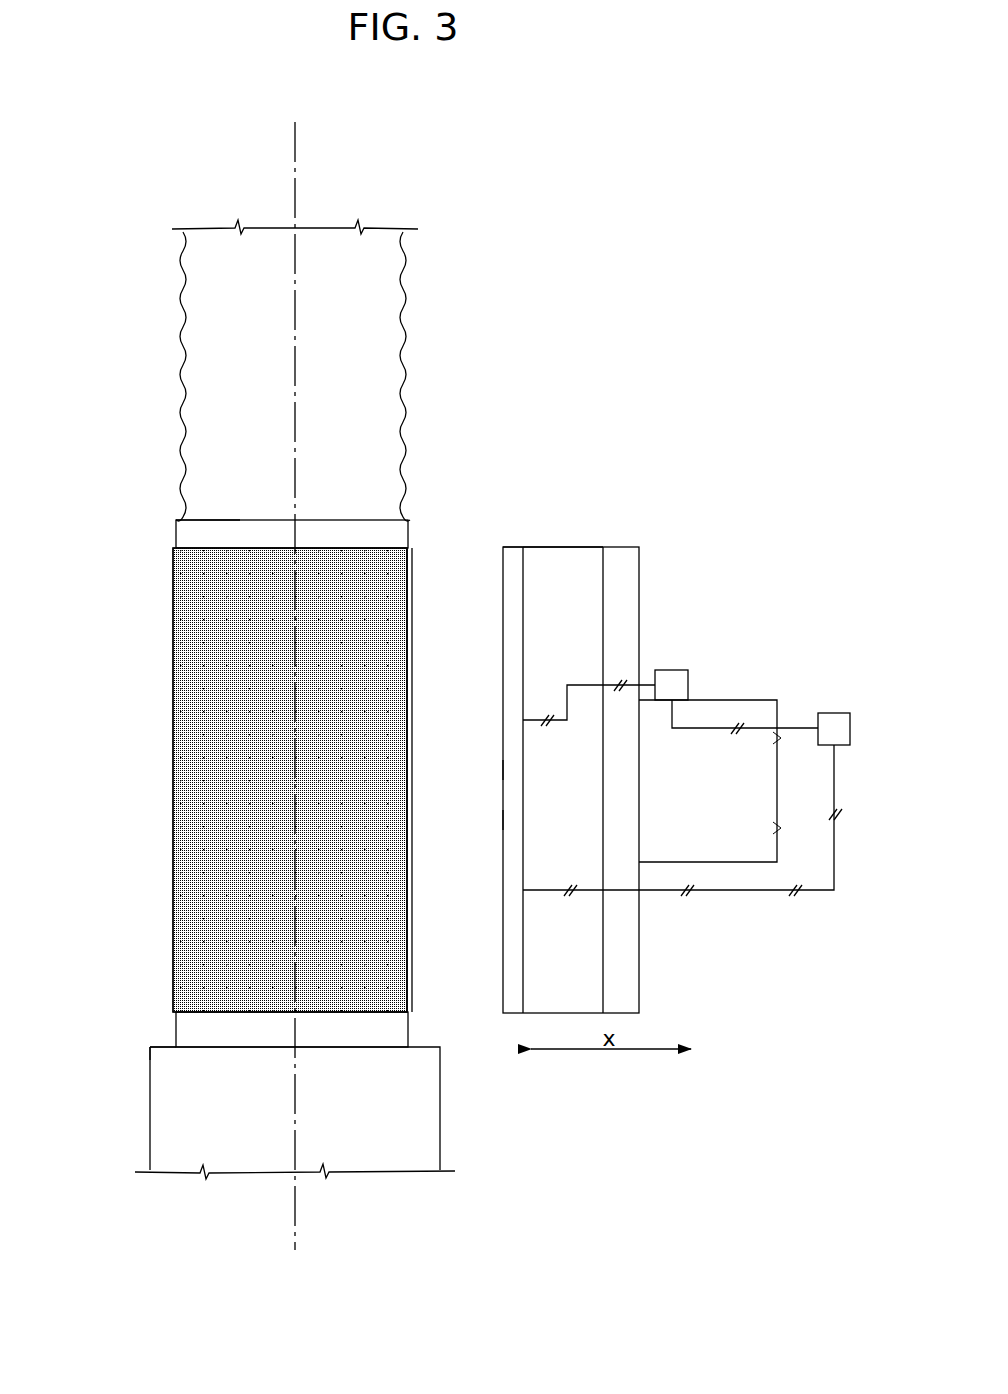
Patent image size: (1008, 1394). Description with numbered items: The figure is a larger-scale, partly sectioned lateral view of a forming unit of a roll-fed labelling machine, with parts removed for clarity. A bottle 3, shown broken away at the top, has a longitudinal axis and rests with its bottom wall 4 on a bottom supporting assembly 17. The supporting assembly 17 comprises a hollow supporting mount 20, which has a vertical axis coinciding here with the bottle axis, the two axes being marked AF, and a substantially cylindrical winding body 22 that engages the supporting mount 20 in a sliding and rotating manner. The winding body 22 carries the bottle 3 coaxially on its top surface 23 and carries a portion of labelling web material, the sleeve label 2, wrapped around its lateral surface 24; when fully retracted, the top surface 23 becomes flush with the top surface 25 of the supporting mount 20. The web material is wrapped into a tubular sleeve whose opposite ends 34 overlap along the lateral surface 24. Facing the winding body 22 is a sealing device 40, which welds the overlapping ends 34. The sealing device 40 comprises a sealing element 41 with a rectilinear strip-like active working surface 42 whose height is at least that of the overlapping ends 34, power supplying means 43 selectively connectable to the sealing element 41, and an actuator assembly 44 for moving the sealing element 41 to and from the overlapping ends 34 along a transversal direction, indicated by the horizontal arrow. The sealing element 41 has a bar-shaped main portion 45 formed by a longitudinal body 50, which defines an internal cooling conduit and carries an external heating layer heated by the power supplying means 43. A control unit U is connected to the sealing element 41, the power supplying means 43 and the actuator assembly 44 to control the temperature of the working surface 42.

The sleeve label 2 is at (194, 746).
The article 3 is at (362, 289).
The bottom wall 4 is at (207, 523).
The bottom supporting assembly 17 is at (133, 1025).
The hollow supporting mount 20 is at (430, 1122).
The winding body 22 is at (414, 1027).
The top surface 23 is at (186, 518).
The lateral surface 24 is at (414, 536).
The top surface 25 is at (164, 1044).
The overlapping ends 34 is at (418, 680).
The sealing device 40 is at (673, 504).
The sealing element 41 is at (557, 546).
The active working surface 42 is at (503, 818).
The power supplying means 43 is at (834, 712).
The actuator assembly 44 is at (727, 727).
The main portion 45 is at (517, 548).
The longitudinal body 50 is at (510, 770).
The control unit U is at (672, 684).
The axes A, F AF is at (300, 150).